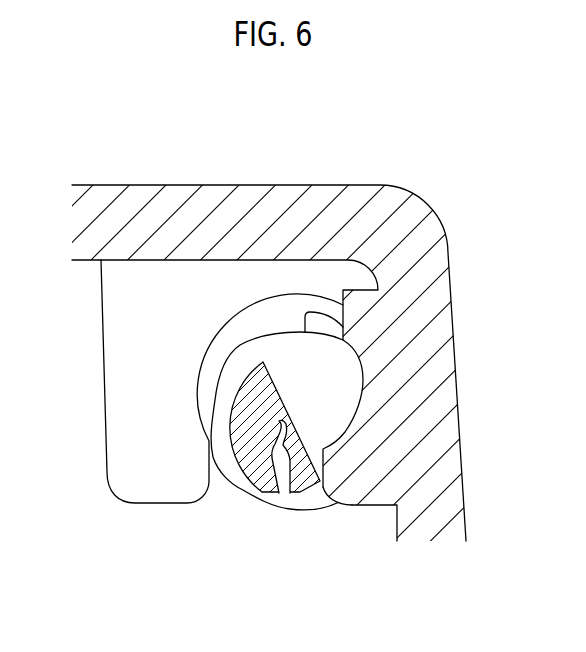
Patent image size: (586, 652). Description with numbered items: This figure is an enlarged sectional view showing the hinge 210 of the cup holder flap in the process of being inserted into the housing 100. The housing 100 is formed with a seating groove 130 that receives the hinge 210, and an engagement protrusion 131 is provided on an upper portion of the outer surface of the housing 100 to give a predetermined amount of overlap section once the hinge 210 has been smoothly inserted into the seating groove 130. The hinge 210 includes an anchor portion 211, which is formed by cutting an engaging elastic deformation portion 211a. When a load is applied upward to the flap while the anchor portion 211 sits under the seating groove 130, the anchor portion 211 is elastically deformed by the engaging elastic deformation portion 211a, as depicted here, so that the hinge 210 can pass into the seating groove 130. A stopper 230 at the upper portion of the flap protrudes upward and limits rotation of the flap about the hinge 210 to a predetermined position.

The housing 100 is at (425, 307).
The seating groove 130 is at (216, 353).
The engagement protrusion 131 is at (332, 503).
The hinge 210 is at (288, 347).
The anchor portion 211 is at (245, 447).
The engaging elastic deformation portion 211a is at (258, 492).
The stopper 230 is at (322, 327).